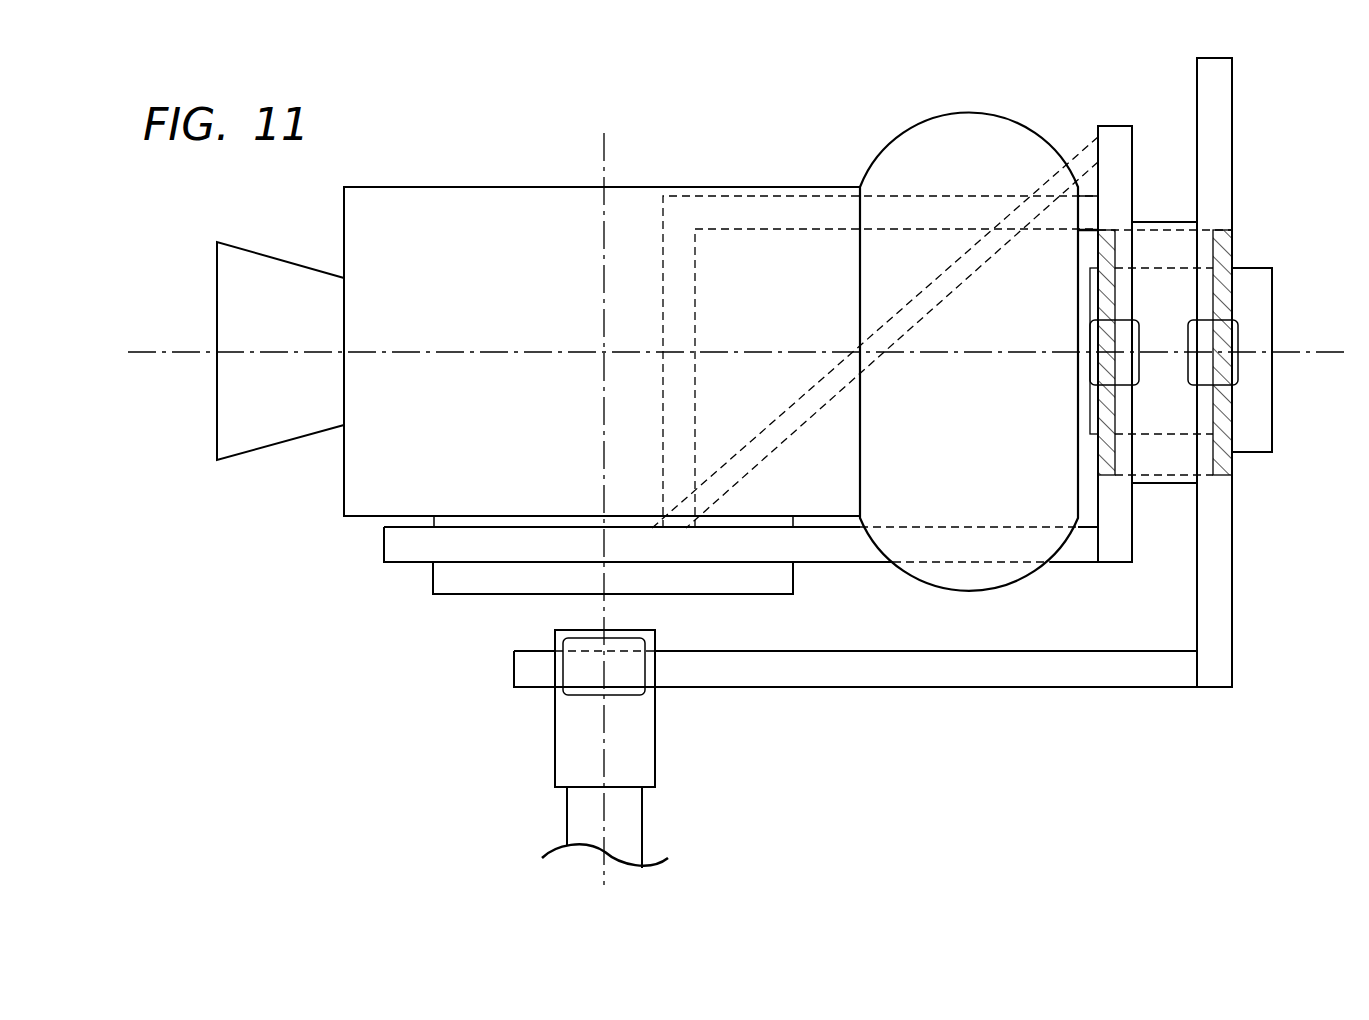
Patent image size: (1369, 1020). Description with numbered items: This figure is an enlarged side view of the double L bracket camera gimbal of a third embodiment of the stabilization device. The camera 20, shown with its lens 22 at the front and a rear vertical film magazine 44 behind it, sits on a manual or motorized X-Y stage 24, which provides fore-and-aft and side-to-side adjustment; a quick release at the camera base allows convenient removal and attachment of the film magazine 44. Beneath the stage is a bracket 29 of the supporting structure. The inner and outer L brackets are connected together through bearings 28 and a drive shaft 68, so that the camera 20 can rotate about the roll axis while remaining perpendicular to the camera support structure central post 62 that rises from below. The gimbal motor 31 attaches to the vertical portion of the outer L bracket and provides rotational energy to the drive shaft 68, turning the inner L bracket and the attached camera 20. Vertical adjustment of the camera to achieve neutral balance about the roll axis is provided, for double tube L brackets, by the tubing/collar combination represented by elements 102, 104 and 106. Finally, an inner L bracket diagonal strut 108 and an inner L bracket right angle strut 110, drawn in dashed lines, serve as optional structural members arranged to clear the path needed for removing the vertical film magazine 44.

The camera 20 is at (429, 223).
The lens 22 is at (278, 283).
The X-Y stage 24 is at (434, 519).
The bearings 28 is at (1115, 425).
The support bracket 29 is at (445, 578).
The double L bracket camera gimbal motor 31 is at (1260, 302).
The rear vertical film magazine 44 is at (923, 163).
The camera support structure central post 62 is at (630, 832).
The drive shaft 68 is at (1152, 288).
The tubing/collar combination element 102 is at (398, 542).
The tubing/collar combination element 104 is at (1067, 666).
The tubing/collar combination element 106 is at (1139, 378).
The inner L bracket diagonal strut 108 is at (1057, 183).
The inner L bracket right angle strut 110 is at (768, 217).